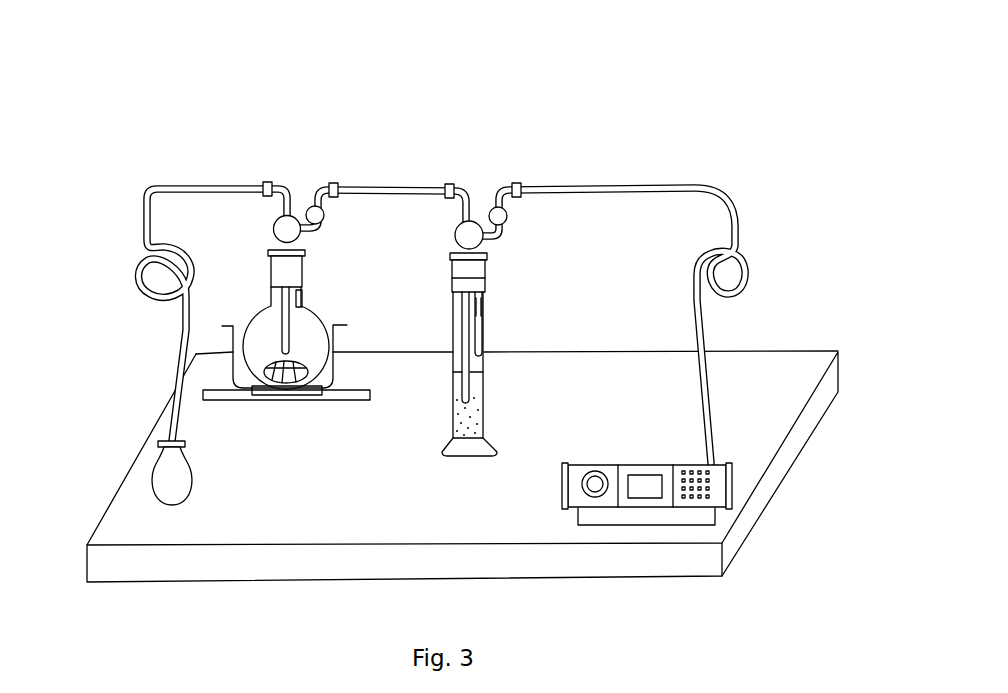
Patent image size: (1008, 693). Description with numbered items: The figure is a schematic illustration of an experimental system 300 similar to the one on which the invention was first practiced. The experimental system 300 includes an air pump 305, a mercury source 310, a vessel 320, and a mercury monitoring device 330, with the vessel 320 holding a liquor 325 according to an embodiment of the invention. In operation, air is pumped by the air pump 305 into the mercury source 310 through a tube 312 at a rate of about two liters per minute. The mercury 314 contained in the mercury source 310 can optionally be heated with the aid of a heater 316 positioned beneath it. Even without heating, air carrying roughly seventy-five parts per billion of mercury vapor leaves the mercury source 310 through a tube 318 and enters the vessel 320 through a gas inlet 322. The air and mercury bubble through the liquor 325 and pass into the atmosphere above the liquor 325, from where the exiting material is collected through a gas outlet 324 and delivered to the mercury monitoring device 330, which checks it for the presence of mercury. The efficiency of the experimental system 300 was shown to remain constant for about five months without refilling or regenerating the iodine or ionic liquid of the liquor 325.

The experimental system 300 is at (458, 301).
The air pump 305 is at (166, 483).
The mercury source 310 is at (321, 308).
The tube 312 is at (287, 314).
The mercury 314 is at (312, 378).
The heater 316 is at (341, 400).
The tube 318 is at (304, 289).
The vessel 320 is at (487, 307).
The gas inlet 322 is at (465, 390).
The gas outlet 324 is at (487, 338).
The liquor 325 is at (470, 418).
The mercury monitoring device 330 is at (732, 486).